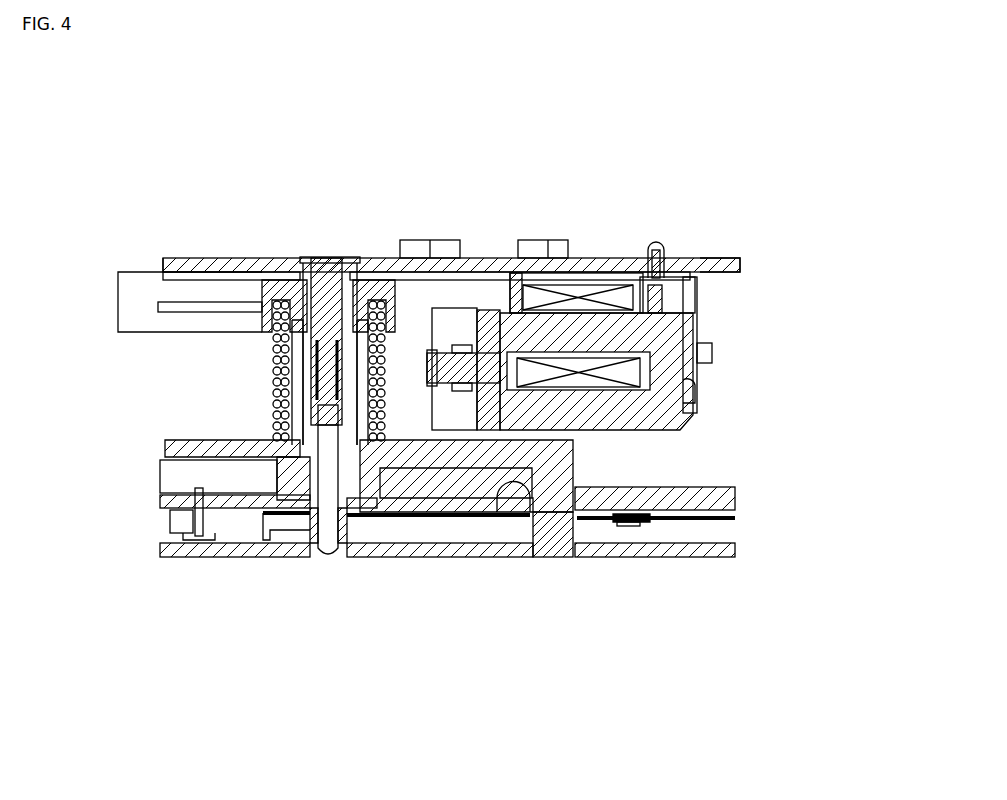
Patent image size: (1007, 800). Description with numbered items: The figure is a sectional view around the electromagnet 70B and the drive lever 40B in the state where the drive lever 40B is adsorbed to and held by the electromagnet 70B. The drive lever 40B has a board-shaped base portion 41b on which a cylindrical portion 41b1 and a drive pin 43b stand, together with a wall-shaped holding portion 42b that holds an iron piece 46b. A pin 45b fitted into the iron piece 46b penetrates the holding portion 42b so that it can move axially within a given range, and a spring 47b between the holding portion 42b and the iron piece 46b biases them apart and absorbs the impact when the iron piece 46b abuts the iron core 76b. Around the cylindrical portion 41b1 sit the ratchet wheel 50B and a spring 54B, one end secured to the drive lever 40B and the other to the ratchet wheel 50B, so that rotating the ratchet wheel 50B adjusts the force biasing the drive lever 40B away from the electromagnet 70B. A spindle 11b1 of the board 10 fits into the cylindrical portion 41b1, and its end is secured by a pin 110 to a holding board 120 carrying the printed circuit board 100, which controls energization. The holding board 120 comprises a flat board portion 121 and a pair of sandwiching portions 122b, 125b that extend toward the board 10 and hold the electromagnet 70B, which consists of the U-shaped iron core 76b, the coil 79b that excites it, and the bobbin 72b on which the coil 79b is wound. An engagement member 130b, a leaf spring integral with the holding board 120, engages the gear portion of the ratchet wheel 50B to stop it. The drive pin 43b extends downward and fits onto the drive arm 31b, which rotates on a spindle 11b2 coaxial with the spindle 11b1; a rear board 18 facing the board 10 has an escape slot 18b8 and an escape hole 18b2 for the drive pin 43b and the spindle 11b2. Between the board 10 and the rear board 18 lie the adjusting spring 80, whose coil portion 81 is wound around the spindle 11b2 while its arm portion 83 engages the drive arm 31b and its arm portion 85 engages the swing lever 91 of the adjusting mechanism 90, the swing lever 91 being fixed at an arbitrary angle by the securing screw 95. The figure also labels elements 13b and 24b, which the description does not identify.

The board 10 is at (228, 512).
The rear board 18 is at (187, 562).
The escape hole 18b2 is at (330, 560).
The escape slot 18b8 is at (548, 560).
The wiring 24b is at (720, 523).
The drive arm 31b is at (302, 560).
The drive lever 40B is at (471, 555).
The base portion 41b is at (433, 522).
The cylindrical portion 41b1 is at (292, 372).
The holding portion 42b is at (455, 270).
The drive pin 43b is at (572, 525).
The pin 45b is at (570, 430).
The iron piece 46b is at (470, 300).
The spring 47b is at (445, 345).
The ratchet wheel 50B is at (393, 335).
The spring 54B is at (275, 335).
The electromagnet 70B is at (722, 350).
The bobbin 72b is at (700, 258).
The iron core 76b is at (708, 323).
The coil 79b is at (600, 262).
The adjusting spring 80 is at (403, 532).
The coil portion 81 is at (353, 522).
The arm portion 83 is at (505, 540).
The arm portion 85 is at (280, 528).
The adjusting mechanism 90 is at (214, 540).
The swing lever 91 is at (212, 500).
The securing screw 95 is at (180, 505).
The printed circuit board 100 is at (225, 258).
The pin 110 is at (326, 257).
The spindle 11b1 is at (355, 270).
The spindle 11b2 is at (342, 532).
The holding board 120 is at (175, 258).
The flat board portion 121 is at (268, 265).
The sandwiching portion 122b is at (512, 272).
The sandwiching portion 125b is at (697, 292).
The engagement member 130b is at (118, 292).
The guide portion 13b is at (537, 525).